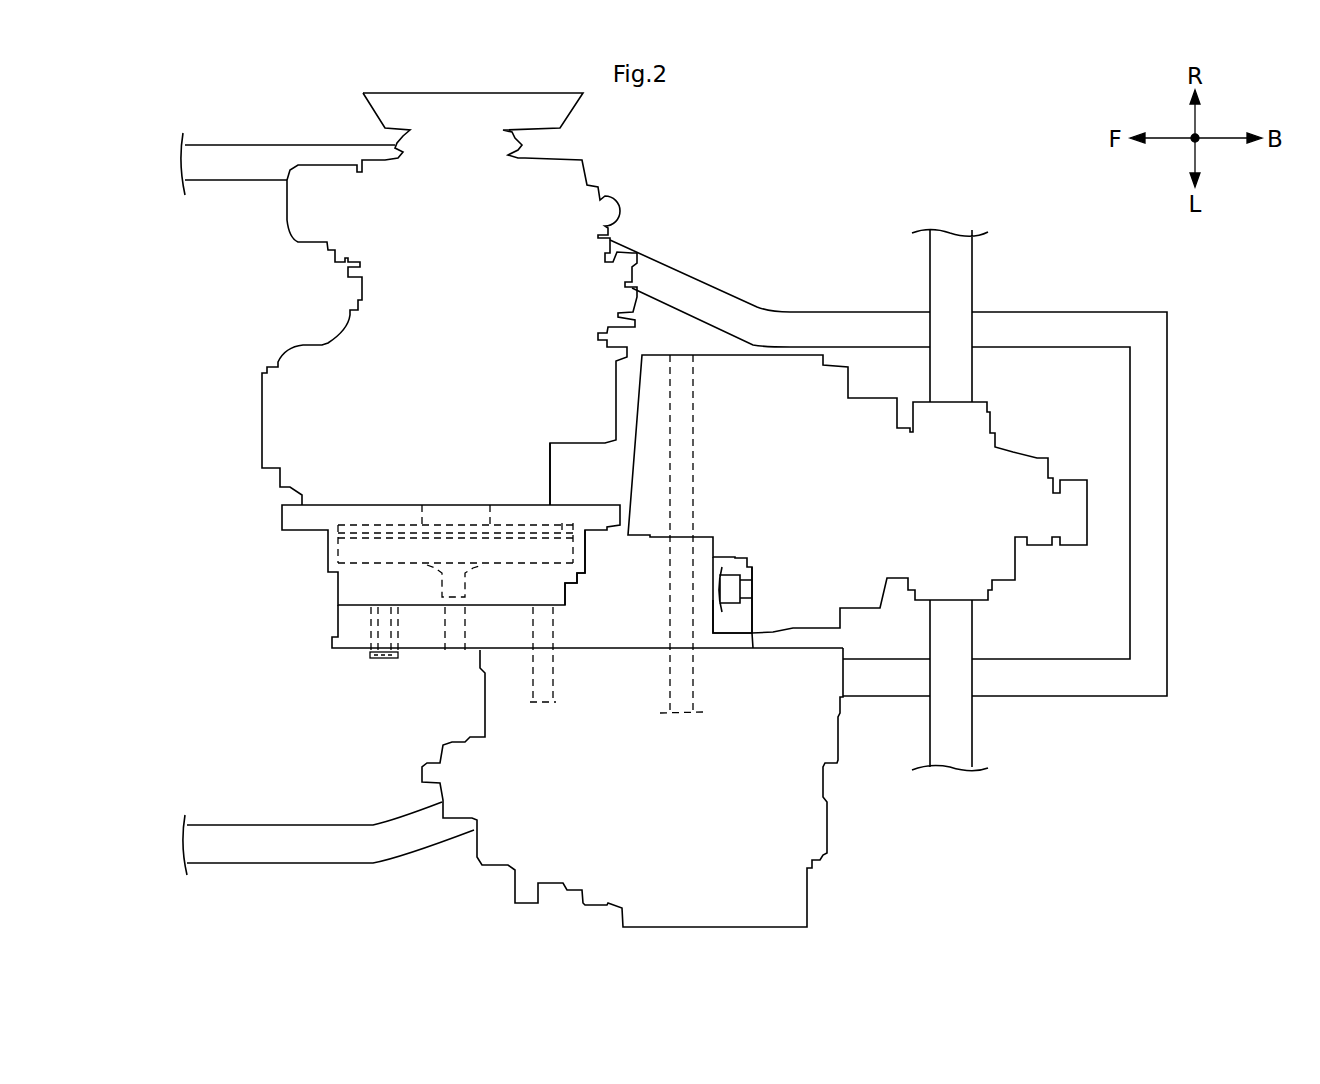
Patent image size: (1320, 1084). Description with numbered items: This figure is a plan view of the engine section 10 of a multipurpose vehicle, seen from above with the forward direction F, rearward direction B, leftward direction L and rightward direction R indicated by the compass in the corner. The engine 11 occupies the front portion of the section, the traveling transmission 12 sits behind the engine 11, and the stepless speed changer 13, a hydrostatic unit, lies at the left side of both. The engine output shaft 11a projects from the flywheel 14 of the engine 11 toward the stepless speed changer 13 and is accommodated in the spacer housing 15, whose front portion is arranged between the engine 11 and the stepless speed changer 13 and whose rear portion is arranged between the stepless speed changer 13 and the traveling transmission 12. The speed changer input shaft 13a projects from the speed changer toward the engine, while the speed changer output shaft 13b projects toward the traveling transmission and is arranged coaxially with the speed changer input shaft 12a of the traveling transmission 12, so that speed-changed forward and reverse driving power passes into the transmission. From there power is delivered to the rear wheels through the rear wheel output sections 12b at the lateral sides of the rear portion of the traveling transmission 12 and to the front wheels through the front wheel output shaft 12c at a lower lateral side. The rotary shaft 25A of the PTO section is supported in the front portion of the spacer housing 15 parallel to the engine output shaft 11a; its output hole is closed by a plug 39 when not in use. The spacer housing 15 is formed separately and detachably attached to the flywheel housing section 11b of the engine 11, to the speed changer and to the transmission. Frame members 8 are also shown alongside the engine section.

The frame pipe 8 is at (830, 326).
The engine section 10 is at (220, 407).
The engine 11 is at (352, 309).
The engine output shaft 11a is at (465, 627).
The flywheel housing section 11b is at (338, 590).
The traveling transmission 12 is at (1015, 450).
The speed changer input shaft 12a is at (693, 452).
The rear wheel output sections 12b is at (957, 275).
The front wheel output shaft 12c is at (730, 575).
The stepless speed changer 13 is at (832, 825).
The speed changer input shaft 13a is at (556, 628).
The speed changer output shaft 13b is at (716, 620).
The flywheel 14 is at (338, 550).
The spacer housing 15 is at (608, 583).
The rotary shaft 25A is at (370, 625).
The plug 39 is at (383, 662).